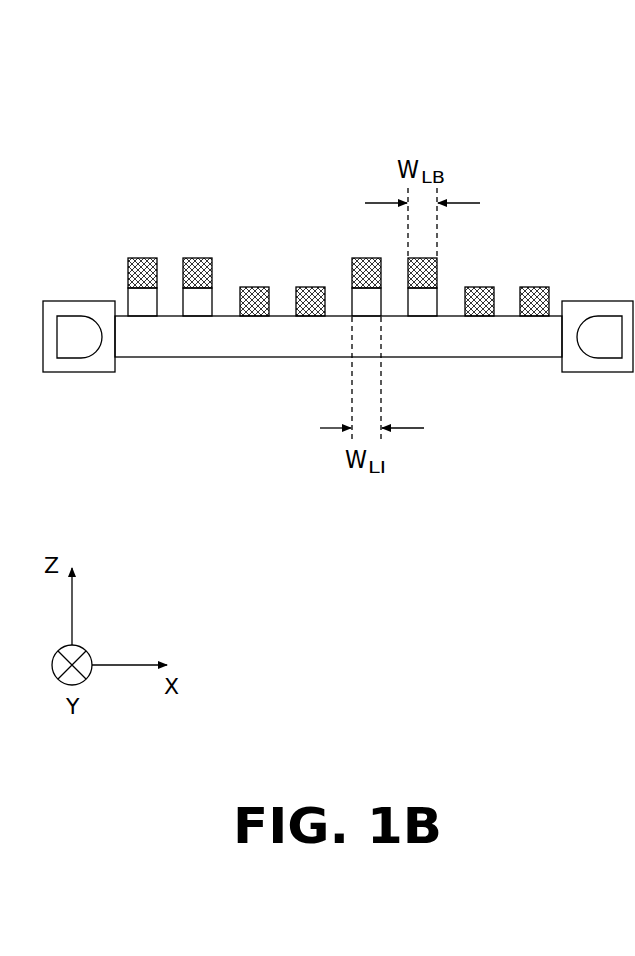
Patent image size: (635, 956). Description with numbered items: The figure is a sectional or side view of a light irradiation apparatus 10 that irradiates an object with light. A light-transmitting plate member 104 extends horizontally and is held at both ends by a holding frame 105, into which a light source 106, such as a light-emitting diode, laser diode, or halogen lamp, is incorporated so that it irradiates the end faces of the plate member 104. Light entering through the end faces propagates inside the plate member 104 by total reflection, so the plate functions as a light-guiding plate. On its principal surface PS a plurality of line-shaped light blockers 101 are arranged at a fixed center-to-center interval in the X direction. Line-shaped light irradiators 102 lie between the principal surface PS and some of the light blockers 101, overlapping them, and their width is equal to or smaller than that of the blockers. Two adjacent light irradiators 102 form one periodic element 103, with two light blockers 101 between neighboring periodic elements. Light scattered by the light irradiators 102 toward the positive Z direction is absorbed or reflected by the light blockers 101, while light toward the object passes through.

The light irradiation apparatus 10 is at (243, 122).
The light blocker 101 is at (143, 258).
The light irradiator 102 is at (141, 308).
The periodic element 103 is at (217, 412).
The plate member 104 is at (498, 345).
The holding frame 105 is at (78, 372).
The light source 106 is at (70, 315).
The principal surface PS is at (510, 315).